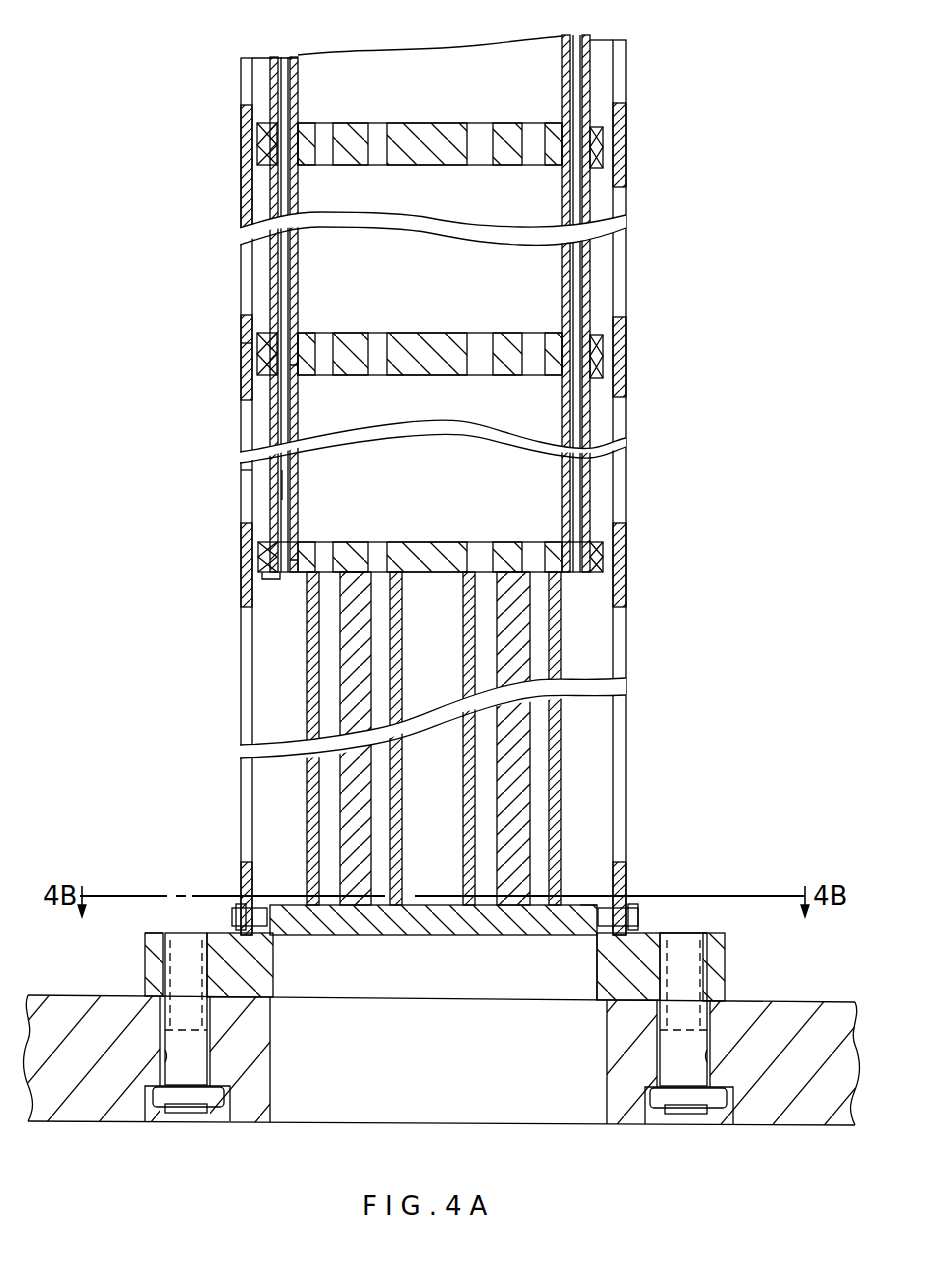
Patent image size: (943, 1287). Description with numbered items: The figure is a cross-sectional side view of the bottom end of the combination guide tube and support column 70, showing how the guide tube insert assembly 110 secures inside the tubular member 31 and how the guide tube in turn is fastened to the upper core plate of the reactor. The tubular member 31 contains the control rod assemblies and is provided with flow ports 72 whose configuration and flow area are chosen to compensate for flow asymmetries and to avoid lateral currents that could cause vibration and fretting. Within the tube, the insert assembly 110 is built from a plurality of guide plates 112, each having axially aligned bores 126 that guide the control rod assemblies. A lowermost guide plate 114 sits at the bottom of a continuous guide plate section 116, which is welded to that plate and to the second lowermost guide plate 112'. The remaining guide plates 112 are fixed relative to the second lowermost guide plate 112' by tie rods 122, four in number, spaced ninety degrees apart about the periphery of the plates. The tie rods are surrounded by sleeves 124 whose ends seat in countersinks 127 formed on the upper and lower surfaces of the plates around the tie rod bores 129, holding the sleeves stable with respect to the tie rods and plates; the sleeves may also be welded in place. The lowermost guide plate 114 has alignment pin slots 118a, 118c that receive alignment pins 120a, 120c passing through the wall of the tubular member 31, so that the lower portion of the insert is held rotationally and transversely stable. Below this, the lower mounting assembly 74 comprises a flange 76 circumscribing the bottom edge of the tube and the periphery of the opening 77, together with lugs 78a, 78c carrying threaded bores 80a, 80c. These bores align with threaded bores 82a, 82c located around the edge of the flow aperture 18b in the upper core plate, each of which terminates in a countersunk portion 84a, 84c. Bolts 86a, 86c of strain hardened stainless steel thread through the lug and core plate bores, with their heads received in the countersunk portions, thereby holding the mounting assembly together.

The guide tube insert assembly 110 is at (254, 36).
The flow ports 72 is at (241, 70).
The sleeves 124 is at (270, 92).
The bores 126 is at (470, 120).
The guide plates 112 is at (498, 247).
The second lowermost guide plate 112' is at (515, 553).
The tubular member 31 is at (241, 343).
The countersinks 127 is at (298, 368).
The tie rods 122 is at (278, 480).
The combination guide tube and support column 70 is at (232, 481).
The tie rod bores 129 is at (272, 580).
The continuous guide plate section 116 is at (302, 800).
The lowermost guide plate 114 is at (585, 902).
The lower mounting assembly 74 is at (150, 908).
The flange 76 is at (680, 923).
The alignment pin 120a is at (232, 912).
The alignment pin 120c is at (636, 915).
The threaded bore 80a is at (195, 935).
The threaded bore 80c is at (684, 942).
The lug 78a is at (145, 962).
The lug 78c is at (725, 968).
The alignment pin slot 118a is at (272, 935).
The alignment pin slot 118c is at (598, 935).
The opening 77 is at (270, 960).
The flow aperture 18b is at (607, 1062).
The threaded bore 82a is at (165, 1055).
The threaded bore 82c is at (707, 1060).
The countersunk portion 84a is at (222, 1121).
The countersunk portion 84c is at (727, 1125).
The bolt 86a is at (185, 1095).
The bolt 86c is at (660, 1095).